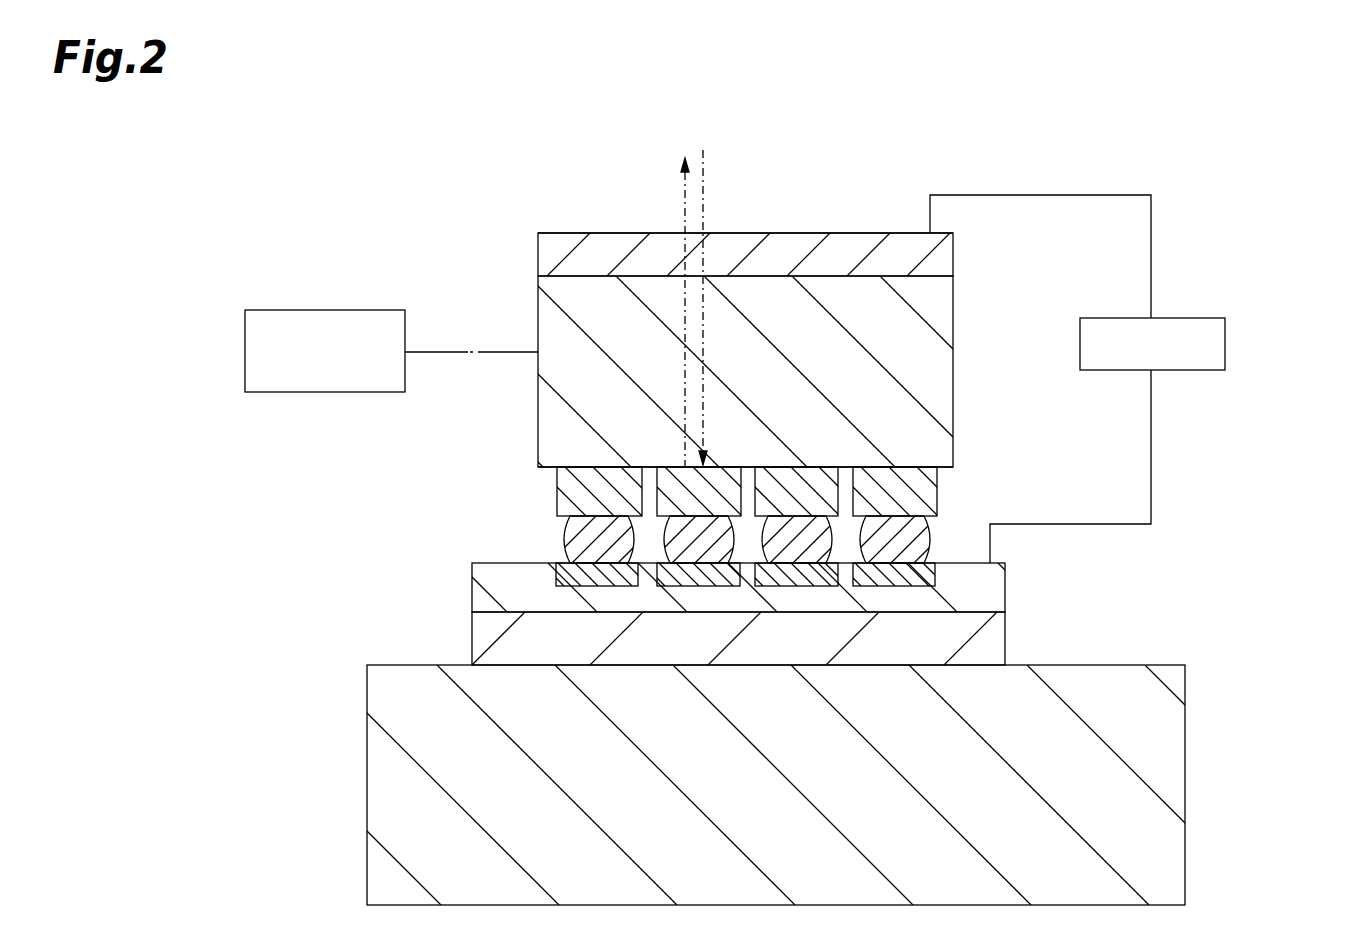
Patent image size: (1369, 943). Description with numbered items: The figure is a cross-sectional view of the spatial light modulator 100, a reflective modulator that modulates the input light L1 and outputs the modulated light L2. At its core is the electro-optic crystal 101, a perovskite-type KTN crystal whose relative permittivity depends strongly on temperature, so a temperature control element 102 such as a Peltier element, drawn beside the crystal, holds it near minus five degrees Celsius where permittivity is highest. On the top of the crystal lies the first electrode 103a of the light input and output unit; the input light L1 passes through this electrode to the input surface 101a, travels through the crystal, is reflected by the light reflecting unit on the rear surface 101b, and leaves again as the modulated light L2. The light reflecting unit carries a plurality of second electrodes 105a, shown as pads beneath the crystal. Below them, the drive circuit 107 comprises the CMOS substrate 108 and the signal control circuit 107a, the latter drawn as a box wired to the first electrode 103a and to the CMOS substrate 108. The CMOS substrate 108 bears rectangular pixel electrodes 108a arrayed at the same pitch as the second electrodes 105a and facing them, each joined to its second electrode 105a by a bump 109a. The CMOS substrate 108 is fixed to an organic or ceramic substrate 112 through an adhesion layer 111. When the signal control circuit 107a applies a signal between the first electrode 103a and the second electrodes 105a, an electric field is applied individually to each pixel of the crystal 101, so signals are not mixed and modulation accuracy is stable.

The spatial light modulator 100 is at (1141, 160).
The electro-optic crystal 101 is at (538, 408).
The input surface 101a is at (945, 270).
The rear surface 101b is at (940, 467).
The temperature control element 102 is at (272, 308).
The first electrode 103a is at (538, 245).
The second electrodes 105a is at (560, 494).
The drive circuit 107 is at (1304, 465).
The signal control circuit 107a is at (1206, 370).
The CMOS substrate 108 is at (1005, 575).
The pixel electrodes 108a is at (556, 580).
The bumps 109a is at (565, 540).
The adhesion layer 111 is at (1006, 632).
The substrate 112 is at (1185, 752).
The input light L1 is at (705, 193).
The modulated light L2 is at (683, 193).